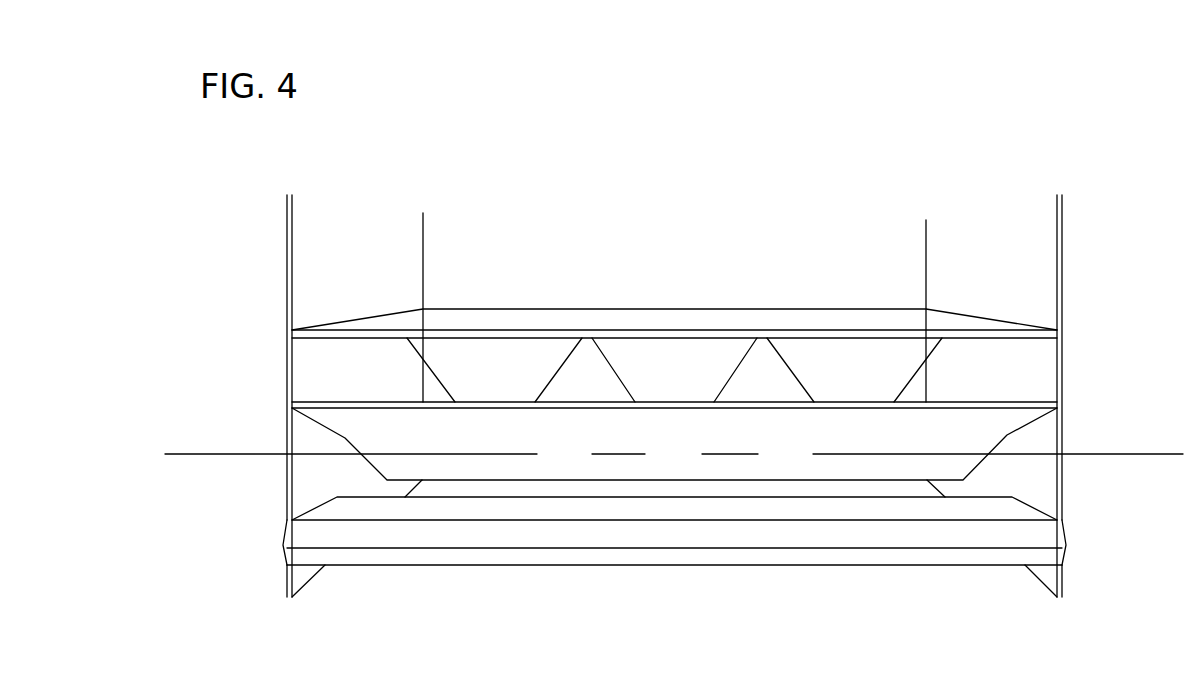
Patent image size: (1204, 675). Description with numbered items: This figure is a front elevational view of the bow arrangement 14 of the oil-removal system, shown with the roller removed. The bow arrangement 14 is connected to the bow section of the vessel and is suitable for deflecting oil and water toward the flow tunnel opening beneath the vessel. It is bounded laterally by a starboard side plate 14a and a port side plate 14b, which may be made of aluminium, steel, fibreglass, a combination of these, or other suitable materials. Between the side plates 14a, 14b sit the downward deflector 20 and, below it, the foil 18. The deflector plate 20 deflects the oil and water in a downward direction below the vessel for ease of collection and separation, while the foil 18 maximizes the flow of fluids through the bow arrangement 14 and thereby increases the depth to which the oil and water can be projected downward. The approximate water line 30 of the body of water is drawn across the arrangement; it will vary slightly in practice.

The bow arrangement 14 is at (674, 310).
The starboard side plate 14a is at (253, 396).
The port side plate 14b is at (1103, 396).
The foil 18 is at (674, 581).
The downward deflector 20 is at (718, 482).
The water line 30 is at (674, 410).